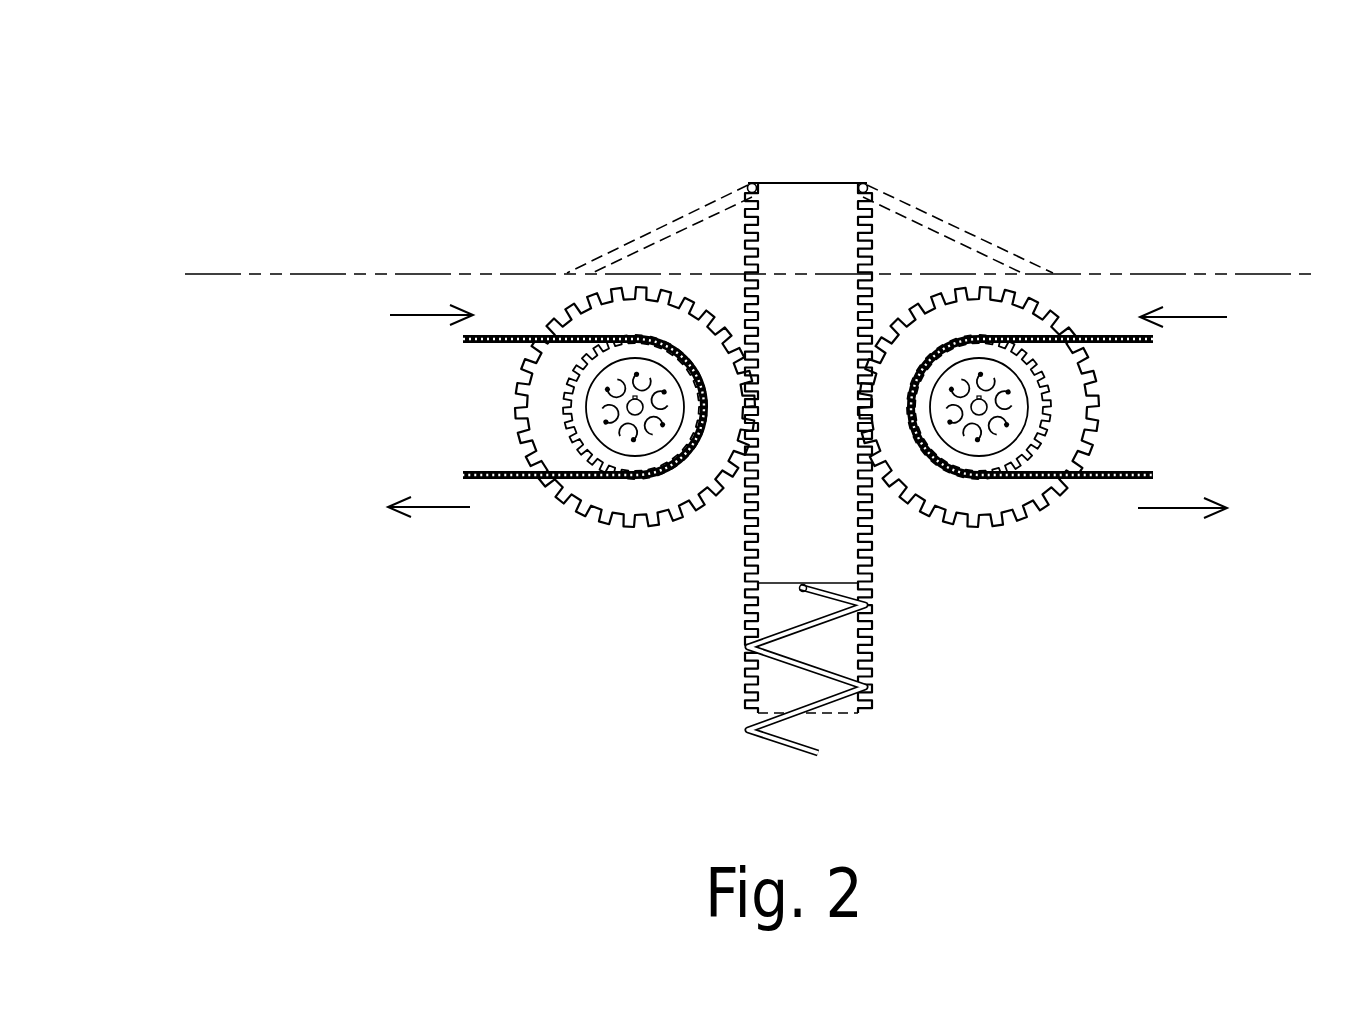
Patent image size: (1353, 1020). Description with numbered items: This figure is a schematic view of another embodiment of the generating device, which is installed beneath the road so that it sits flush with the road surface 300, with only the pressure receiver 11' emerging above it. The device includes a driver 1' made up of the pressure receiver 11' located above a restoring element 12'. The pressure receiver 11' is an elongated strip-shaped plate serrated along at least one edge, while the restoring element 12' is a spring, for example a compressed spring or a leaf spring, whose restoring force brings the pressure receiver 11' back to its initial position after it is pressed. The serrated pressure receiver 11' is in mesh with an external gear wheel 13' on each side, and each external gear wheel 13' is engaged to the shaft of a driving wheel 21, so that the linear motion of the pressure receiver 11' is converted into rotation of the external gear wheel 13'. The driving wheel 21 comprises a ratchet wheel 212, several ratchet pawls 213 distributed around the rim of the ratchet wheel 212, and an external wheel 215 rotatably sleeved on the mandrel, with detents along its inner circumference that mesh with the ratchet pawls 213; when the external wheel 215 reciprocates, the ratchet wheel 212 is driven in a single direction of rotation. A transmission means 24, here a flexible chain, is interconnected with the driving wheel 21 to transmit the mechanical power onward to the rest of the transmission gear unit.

The driver 1' is at (776, 392).
The pressure receiver 11' is at (810, 372).
The restoring element 12' is at (741, 669).
The external gear wheel 13' is at (868, 457).
The driving wheel 21 is at (776, 396).
The ratchet wheel 212 is at (632, 380).
The ratchet pawls 213 is at (577, 381).
The external wheel 215 is at (585, 433).
The transmission means 24 is at (480, 478).
The road surface 300 is at (352, 274).